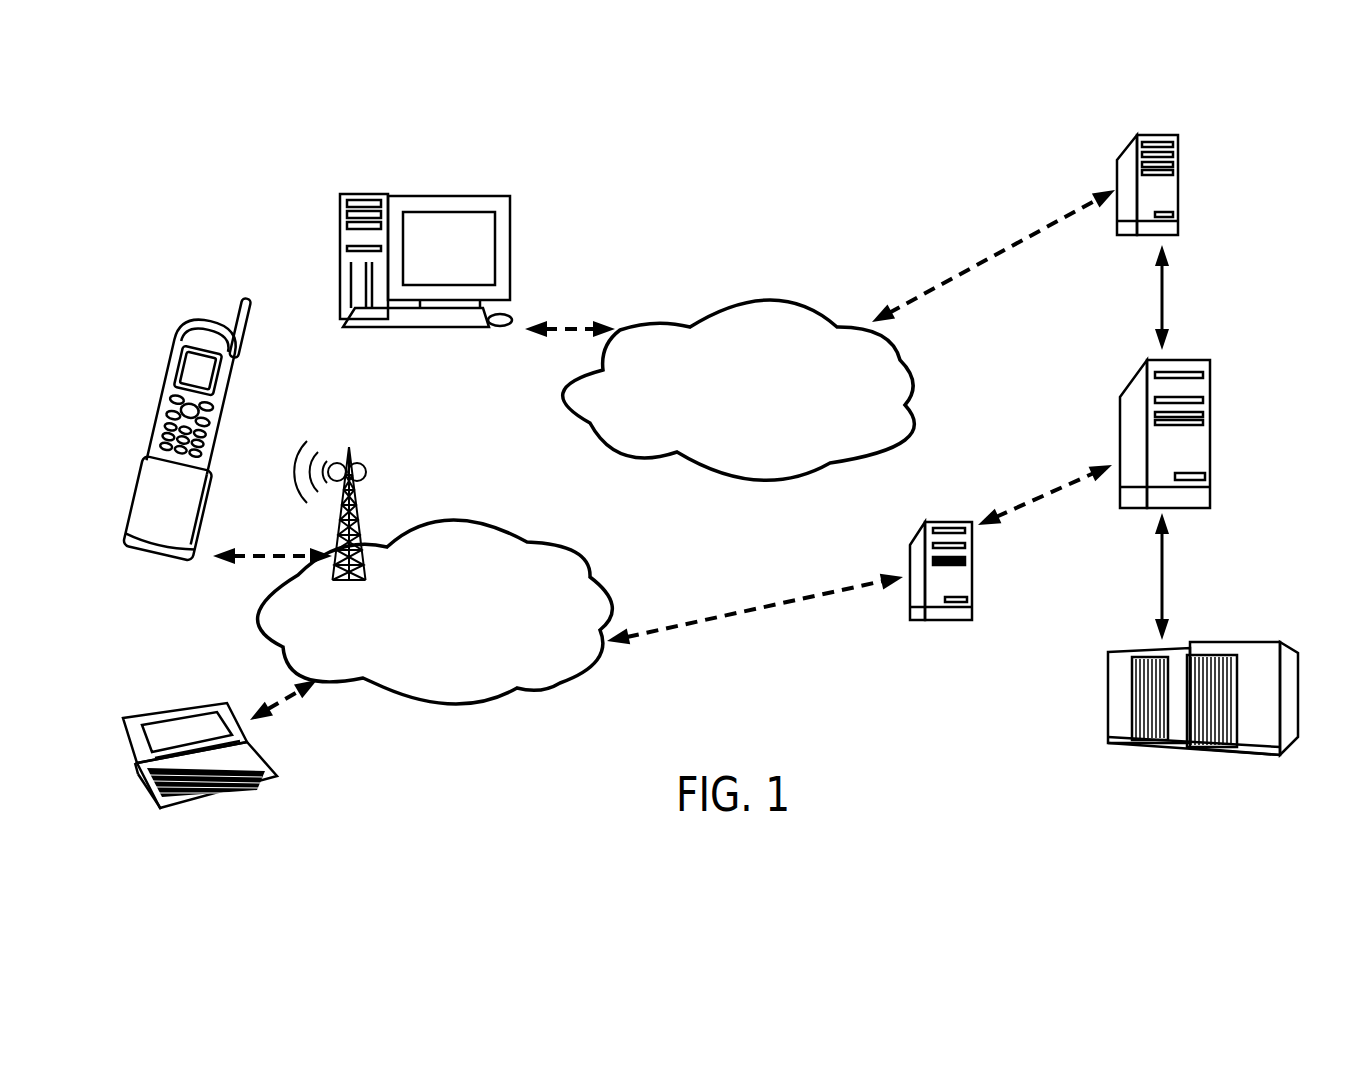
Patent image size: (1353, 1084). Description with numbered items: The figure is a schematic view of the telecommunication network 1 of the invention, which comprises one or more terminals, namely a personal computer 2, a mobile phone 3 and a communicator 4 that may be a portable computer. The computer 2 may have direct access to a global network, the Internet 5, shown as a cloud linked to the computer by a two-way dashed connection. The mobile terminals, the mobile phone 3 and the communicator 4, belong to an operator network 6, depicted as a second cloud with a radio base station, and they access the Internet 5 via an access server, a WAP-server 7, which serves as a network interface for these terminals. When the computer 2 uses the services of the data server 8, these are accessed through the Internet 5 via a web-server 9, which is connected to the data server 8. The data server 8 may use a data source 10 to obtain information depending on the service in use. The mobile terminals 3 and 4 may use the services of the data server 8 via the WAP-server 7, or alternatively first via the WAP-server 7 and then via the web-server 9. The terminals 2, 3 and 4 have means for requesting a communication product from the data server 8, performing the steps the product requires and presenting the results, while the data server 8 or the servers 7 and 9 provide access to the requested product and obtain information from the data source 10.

The telecommunication network 1 is at (736, 160).
The personal computer 2 is at (505, 266).
The mobile phone 3 is at (236, 418).
The communicator 4 is at (207, 793).
The Internet 5 is at (907, 387).
The operator network 6 is at (492, 697).
The WAP-server 7 is at (972, 610).
The data server 8 is at (1207, 387).
The web-server 9 is at (1173, 195).
The data source 10 is at (1247, 640).